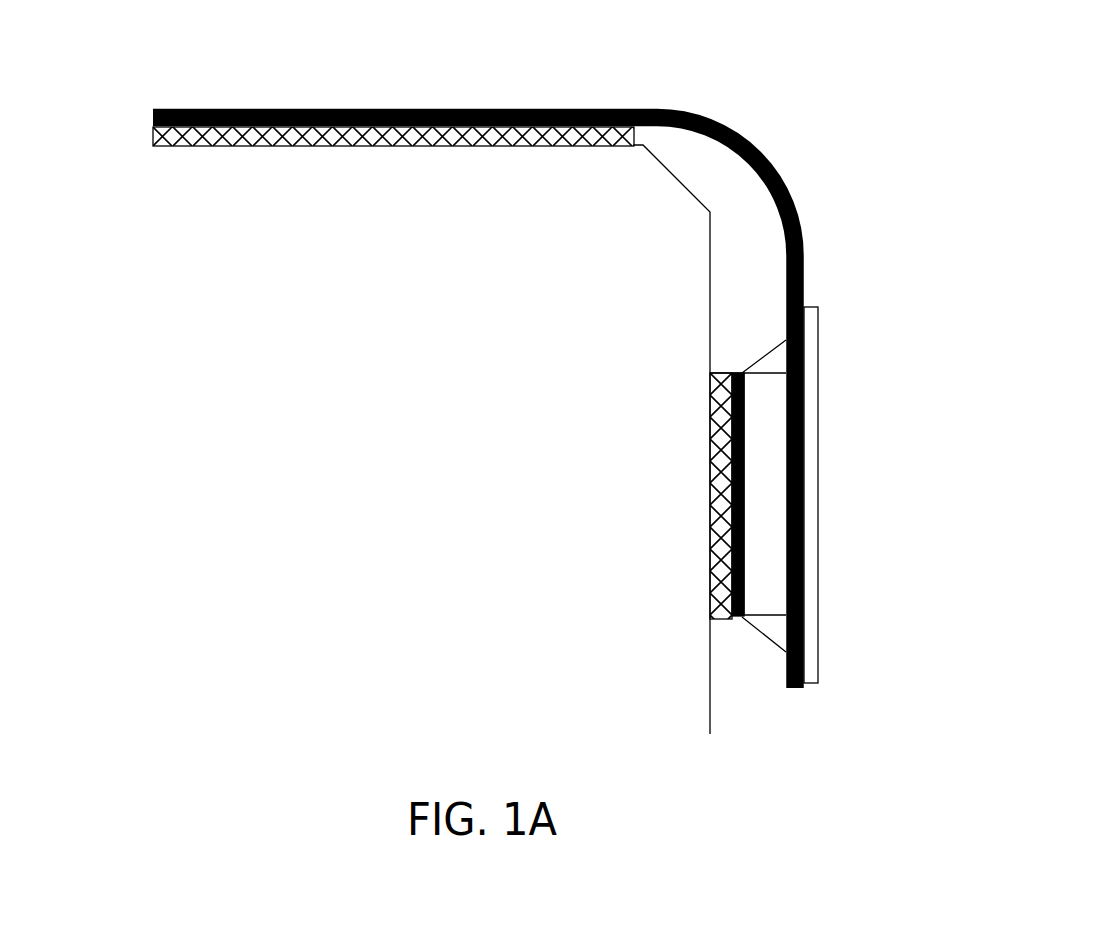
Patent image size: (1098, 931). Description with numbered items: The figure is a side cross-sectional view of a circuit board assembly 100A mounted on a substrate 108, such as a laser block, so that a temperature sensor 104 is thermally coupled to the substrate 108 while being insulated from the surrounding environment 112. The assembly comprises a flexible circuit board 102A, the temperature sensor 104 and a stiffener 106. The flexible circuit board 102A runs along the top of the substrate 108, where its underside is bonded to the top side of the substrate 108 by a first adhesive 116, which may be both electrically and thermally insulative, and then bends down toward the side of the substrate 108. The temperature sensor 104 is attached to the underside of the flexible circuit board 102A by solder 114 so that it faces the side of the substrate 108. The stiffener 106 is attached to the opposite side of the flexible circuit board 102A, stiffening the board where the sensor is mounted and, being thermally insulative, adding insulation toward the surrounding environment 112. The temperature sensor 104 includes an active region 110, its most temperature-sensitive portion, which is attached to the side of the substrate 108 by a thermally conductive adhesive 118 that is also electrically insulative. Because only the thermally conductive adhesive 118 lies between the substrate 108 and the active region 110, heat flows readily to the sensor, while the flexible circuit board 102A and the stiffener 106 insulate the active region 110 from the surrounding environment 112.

The circuit board assembly 100A is at (862, 140).
The flexible circuit board 102A is at (758, 151).
The temperature sensor 104 is at (765, 442).
The stiffener 106 is at (810, 580).
The substrate 108 is at (673, 735).
The active region 110 is at (740, 620).
The surrounding environment 112 is at (1022, 392).
The solder 114 is at (782, 362).
The first adhesive 116 is at (155, 134).
The thermally conductive adhesive 118 is at (722, 447).